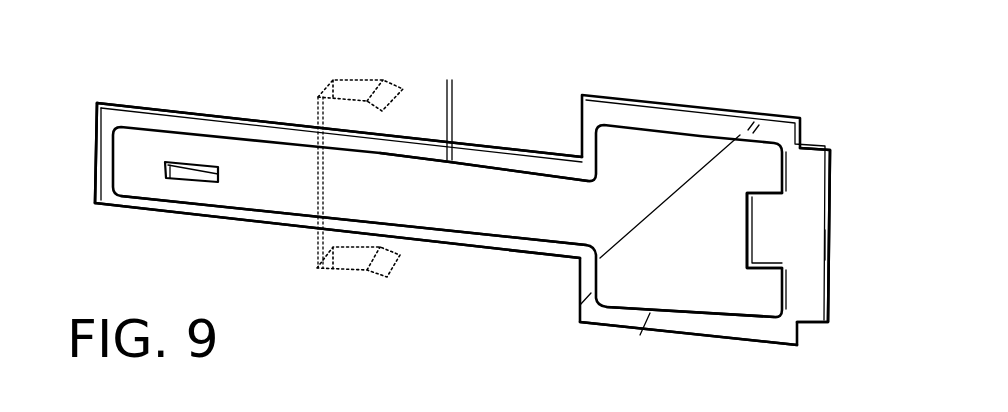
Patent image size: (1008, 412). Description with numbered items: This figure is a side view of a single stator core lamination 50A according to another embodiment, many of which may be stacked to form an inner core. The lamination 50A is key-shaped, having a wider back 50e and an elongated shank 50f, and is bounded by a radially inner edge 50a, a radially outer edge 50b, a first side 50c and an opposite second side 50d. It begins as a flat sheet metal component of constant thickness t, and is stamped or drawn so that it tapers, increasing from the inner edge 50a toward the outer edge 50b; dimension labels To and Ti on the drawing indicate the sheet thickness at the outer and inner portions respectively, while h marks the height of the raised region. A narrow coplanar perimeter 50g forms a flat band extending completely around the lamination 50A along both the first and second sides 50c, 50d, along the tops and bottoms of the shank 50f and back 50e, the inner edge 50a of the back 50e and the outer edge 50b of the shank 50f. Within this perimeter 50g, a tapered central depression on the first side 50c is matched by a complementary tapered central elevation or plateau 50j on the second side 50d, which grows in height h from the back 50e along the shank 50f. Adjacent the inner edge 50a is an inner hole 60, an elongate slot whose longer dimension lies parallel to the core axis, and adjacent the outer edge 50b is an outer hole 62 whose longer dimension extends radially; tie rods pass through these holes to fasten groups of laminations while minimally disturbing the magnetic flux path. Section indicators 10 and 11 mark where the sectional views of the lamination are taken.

The lamination 50A is at (620, 93).
The inner edge 50a is at (830, 288).
The outer edge 50b is at (92, 182).
The first side 50c is at (554, 175).
The second side 50d is at (483, 172).
The back 50e is at (662, 294).
The shank 50f is at (262, 199).
The coplanar perimeter 50g is at (257, 132).
The tapered central elevation or plateau 50j is at (437, 210).
The inner hole 60 is at (747, 239).
The outer hole 62 is at (188, 182).
The section line 10- 10 is at (125, 9).
The section line 11- 11 is at (367, 180).
The thickness t is at (88, 140).
The outer thickness To is at (123, 158).
The inner thickness Ti is at (802, 277).
The height h is at (430, 120).